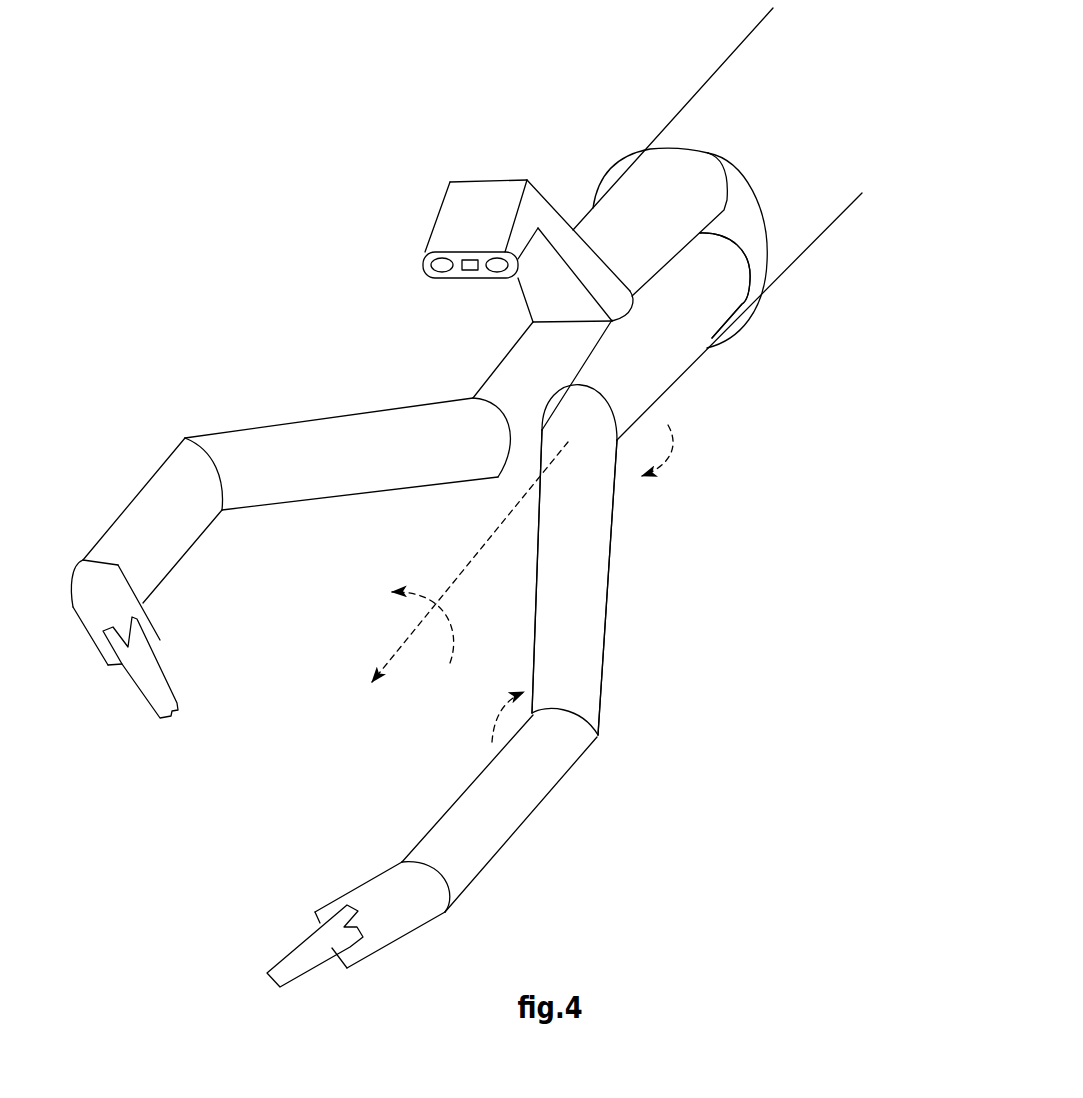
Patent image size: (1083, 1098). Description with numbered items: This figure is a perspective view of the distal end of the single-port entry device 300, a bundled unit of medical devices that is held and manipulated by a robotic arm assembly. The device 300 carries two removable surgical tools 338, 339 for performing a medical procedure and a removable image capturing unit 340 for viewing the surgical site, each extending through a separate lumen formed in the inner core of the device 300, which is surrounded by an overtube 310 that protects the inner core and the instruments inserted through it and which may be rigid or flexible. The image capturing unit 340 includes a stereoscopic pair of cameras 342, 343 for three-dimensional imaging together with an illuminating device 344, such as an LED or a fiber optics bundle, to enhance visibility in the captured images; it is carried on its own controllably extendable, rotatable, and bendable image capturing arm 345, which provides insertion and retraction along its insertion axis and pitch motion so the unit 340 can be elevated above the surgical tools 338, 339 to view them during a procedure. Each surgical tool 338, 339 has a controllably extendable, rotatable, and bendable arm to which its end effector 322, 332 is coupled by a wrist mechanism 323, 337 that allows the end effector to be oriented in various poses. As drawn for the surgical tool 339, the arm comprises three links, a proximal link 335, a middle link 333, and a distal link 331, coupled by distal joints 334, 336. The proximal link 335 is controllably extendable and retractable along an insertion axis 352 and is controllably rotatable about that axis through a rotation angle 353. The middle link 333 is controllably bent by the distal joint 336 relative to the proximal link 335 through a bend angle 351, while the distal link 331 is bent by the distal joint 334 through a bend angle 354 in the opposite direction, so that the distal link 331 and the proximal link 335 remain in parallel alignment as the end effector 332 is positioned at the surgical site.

The single-port entry device 300 is at (658, 60).
The overtube 310 is at (795, 255).
The end effector 322 is at (125, 690).
The wrist mechanism 323 is at (86, 557).
The distal link 331 is at (494, 832).
The end effector 332 is at (290, 930).
The middle link 333 is at (588, 630).
The distal joint 334 is at (606, 740).
The proximal link 335 is at (670, 328).
The distal joint 336 is at (605, 401).
The wrist mechanism 337 is at (395, 856).
The surgical tool 338 is at (262, 393).
The surgical tool 339 is at (653, 595).
The image capturing unit 340 is at (433, 267).
The camera 342 is at (431, 269).
The camera 343 is at (488, 277).
The illuminating device 344 is at (461, 274).
The image capturing arm 345 is at (561, 177).
The bend angle 351 is at (678, 453).
The insertion axis 352 is at (474, 558).
The rotation angle 353 is at (460, 631).
The bend angle 354 is at (492, 713).